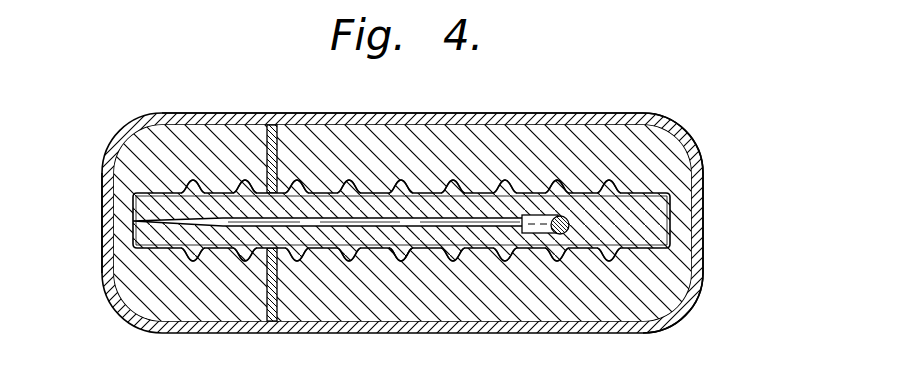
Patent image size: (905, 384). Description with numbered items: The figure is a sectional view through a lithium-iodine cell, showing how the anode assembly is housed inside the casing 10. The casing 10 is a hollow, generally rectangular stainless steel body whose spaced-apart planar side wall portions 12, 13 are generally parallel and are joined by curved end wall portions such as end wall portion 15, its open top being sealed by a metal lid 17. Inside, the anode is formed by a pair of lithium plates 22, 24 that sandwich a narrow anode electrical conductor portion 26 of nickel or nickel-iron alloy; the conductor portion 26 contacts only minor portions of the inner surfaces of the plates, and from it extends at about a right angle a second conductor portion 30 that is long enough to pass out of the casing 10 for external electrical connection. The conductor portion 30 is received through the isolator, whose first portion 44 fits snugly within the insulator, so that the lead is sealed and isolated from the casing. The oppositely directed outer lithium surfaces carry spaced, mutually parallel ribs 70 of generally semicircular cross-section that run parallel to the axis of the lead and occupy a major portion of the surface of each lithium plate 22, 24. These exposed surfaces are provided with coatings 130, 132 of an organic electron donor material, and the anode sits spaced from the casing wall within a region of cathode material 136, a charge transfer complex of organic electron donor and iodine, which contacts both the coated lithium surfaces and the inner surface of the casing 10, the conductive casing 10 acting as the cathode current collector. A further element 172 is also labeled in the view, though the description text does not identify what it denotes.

The casing 10 is at (665, 102).
The side wall portion 12 is at (468, 332).
The side wall portion 13 is at (505, 113).
The end wall portion 15 is at (703, 221).
The lid 17 is at (102, 221).
The lithium plate 22 is at (667, 293).
The lithium plate 24 is at (672, 147).
The anode electrical conductor portion 26 is at (410, 258).
The anode conductor portion 30 is at (546, 236).
The first portion of isolator 44 is at (568, 216).
The ribs 70 is at (412, 180).
The coating 130 is at (318, 258).
The coating 132 is at (332, 188).
The cathode material 136 is at (228, 123).
The partition wall 172 is at (272, 127).